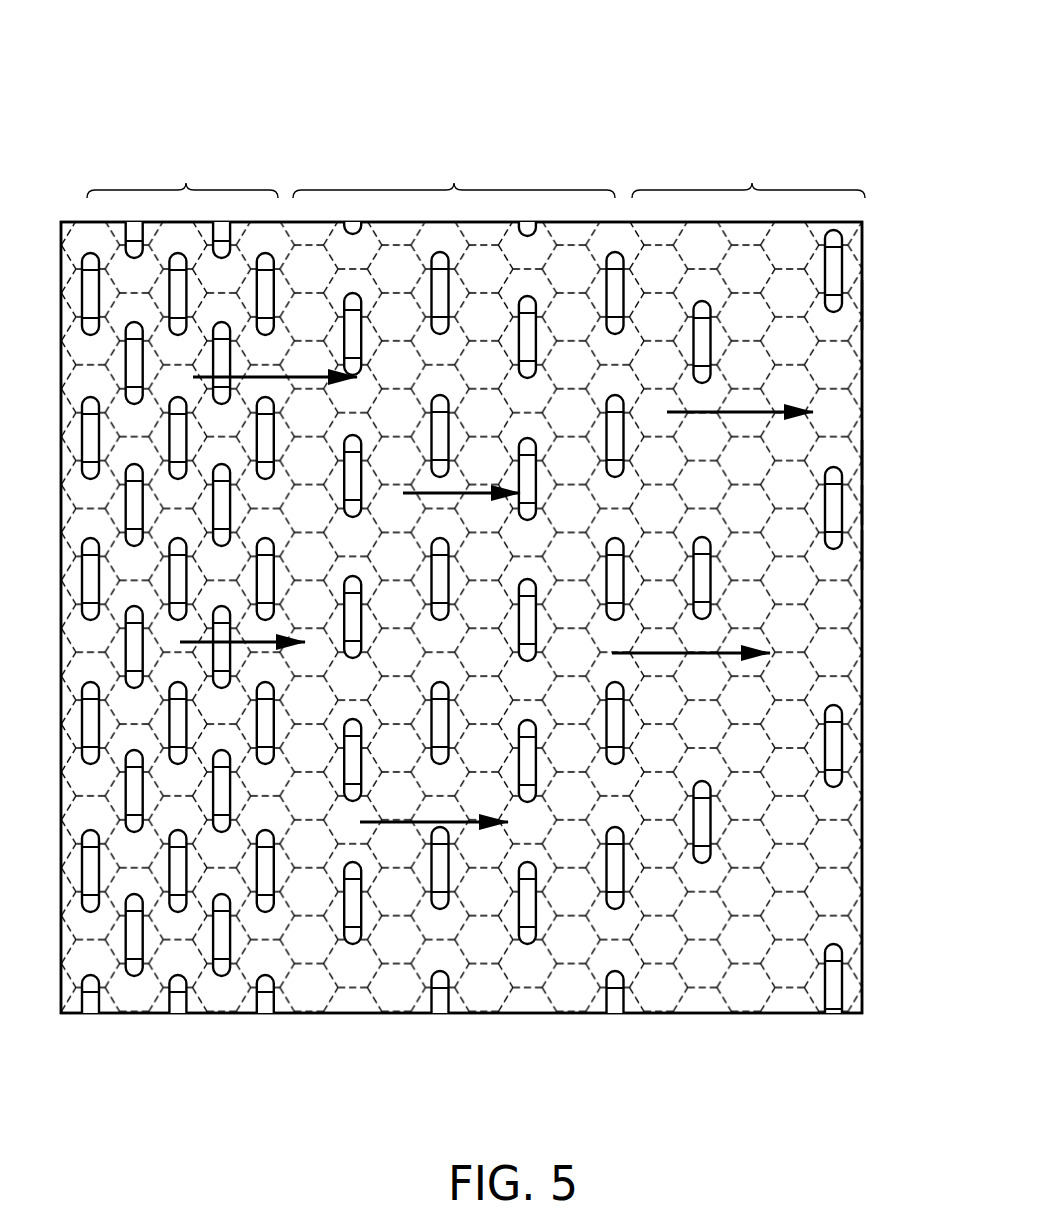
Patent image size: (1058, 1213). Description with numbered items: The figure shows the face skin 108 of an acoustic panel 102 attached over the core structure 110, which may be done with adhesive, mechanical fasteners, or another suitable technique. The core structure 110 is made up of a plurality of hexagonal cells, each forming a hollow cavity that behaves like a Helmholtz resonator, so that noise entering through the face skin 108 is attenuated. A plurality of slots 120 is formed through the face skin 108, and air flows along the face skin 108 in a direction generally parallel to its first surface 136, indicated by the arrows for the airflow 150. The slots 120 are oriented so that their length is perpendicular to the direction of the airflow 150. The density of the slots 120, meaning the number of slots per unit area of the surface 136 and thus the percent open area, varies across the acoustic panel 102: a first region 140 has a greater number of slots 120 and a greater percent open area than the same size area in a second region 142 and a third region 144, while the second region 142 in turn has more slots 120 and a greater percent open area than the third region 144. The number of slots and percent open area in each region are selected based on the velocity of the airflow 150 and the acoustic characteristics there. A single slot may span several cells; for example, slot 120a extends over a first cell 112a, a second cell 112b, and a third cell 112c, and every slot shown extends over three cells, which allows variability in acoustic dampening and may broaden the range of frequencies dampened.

The acoustic panel 102 is at (155, 117).
The face skin 108 is at (862, 230).
The core structure 110 is at (858, 303).
The first cell 112a is at (852, 464).
The second cell 112b is at (855, 513).
The third cell 112c is at (852, 556).
The slots 120 is at (270, 292).
The slot 120a is at (832, 502).
The first surface 136 is at (496, 341).
The first region 140 is at (182, 174).
The second region 142 is at (454, 172).
The third region 144 is at (748, 171).
The airflow 150 is at (481, 600).